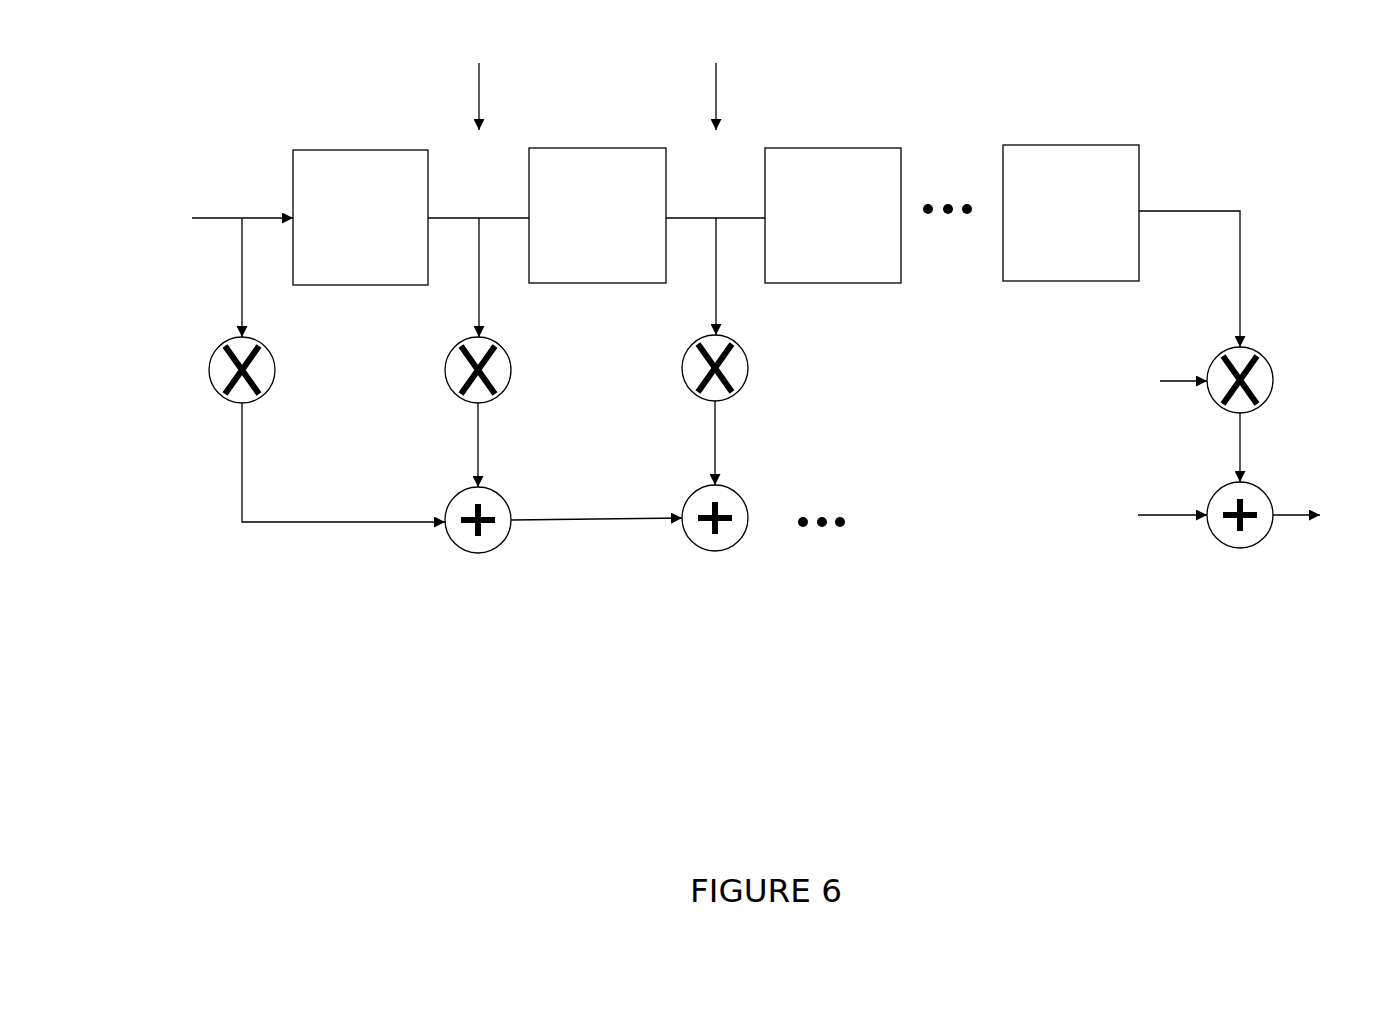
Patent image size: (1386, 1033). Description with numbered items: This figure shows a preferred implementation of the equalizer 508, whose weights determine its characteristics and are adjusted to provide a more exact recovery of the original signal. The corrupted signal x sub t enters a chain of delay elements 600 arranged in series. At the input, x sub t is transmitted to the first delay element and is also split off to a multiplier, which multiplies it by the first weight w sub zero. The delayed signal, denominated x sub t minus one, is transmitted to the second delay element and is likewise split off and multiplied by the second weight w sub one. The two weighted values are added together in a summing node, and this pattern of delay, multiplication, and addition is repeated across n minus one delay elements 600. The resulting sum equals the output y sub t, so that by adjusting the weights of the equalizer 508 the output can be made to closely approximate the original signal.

The equalizer 508 is at (206, 184).
The delay elements 600 is at (716, 215).